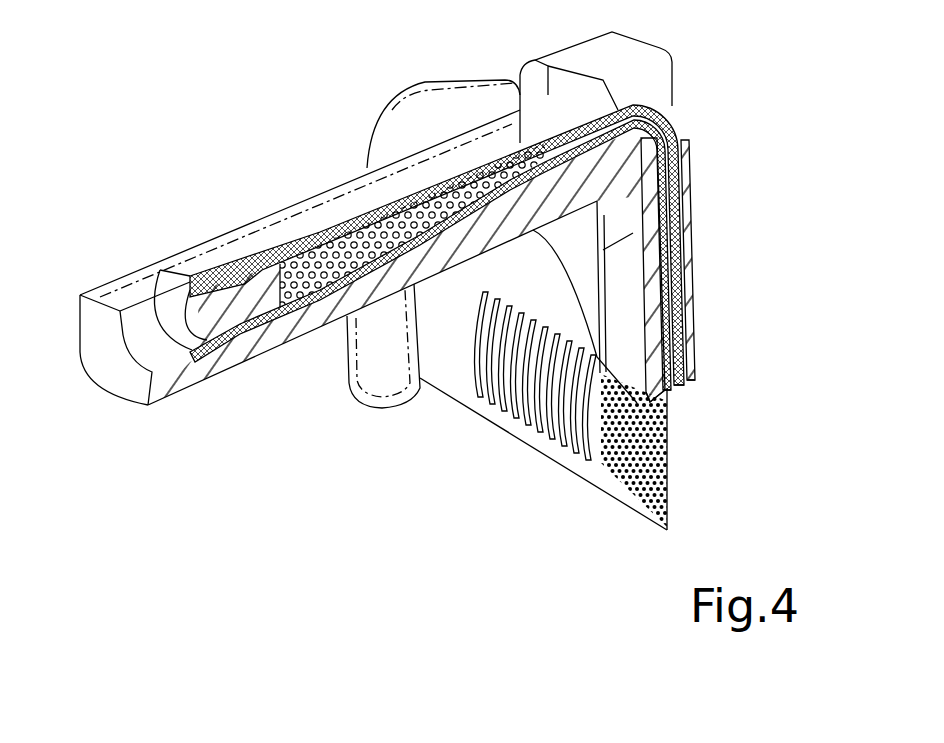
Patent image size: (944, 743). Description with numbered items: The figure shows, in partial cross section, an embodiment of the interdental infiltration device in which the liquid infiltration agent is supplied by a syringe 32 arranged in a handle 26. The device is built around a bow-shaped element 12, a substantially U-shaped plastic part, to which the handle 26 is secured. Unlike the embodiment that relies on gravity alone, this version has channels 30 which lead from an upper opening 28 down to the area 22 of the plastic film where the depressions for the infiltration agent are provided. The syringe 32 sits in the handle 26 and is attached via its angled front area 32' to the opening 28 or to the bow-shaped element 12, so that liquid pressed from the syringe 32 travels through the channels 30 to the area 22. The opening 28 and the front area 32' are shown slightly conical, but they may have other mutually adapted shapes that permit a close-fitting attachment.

The bow-shaped element 12 is at (415, 93).
The area of depressions 22 is at (653, 472).
The handle 26 is at (313, 323).
The upper opening 28 is at (658, 140).
The channels 30 is at (683, 340).
The syringe 32 is at (423, 248).
The angled front area 32' is at (736, 260).